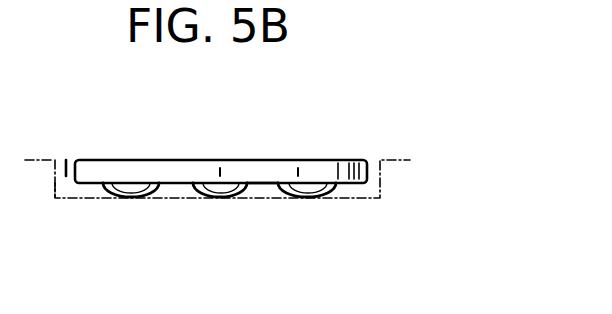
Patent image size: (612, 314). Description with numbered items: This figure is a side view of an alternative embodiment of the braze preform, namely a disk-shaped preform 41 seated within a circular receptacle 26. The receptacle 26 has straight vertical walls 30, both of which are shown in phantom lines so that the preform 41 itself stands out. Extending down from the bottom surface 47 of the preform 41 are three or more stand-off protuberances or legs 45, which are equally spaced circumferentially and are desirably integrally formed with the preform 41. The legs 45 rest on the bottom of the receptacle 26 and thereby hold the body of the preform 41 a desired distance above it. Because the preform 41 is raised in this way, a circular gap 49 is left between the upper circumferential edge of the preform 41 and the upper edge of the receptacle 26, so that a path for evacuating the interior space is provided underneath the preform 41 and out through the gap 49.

The circular receptacle 26 is at (40, 158).
The straight vertical walls 30 is at (42, 187).
The disk-shaped preform 41 is at (317, 166).
The stand-off protuberances 45 is at (133, 198).
The bottom surface 47 is at (265, 199).
The circular gap 49 is at (66, 162).